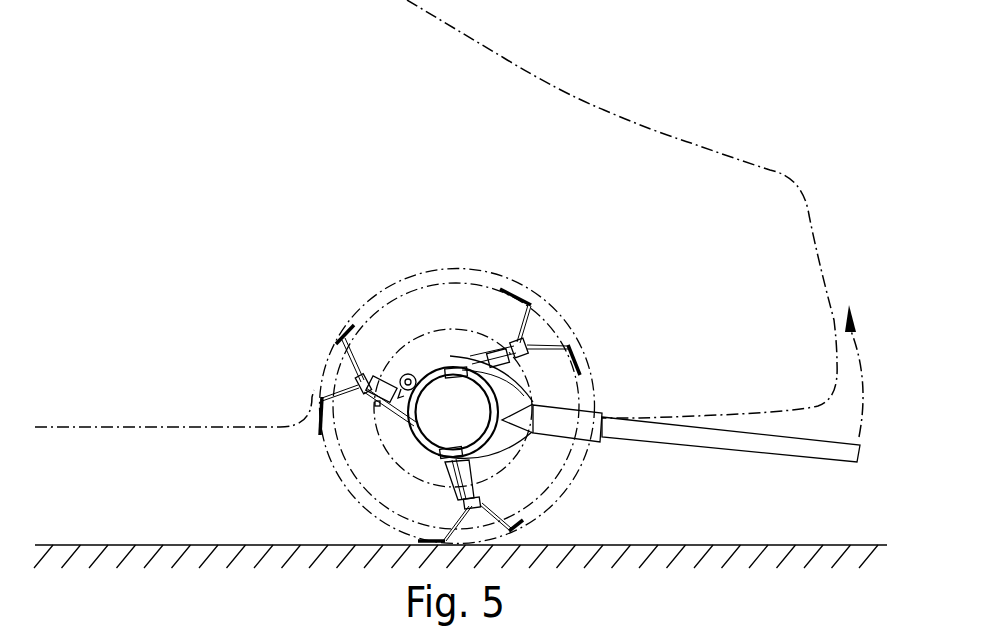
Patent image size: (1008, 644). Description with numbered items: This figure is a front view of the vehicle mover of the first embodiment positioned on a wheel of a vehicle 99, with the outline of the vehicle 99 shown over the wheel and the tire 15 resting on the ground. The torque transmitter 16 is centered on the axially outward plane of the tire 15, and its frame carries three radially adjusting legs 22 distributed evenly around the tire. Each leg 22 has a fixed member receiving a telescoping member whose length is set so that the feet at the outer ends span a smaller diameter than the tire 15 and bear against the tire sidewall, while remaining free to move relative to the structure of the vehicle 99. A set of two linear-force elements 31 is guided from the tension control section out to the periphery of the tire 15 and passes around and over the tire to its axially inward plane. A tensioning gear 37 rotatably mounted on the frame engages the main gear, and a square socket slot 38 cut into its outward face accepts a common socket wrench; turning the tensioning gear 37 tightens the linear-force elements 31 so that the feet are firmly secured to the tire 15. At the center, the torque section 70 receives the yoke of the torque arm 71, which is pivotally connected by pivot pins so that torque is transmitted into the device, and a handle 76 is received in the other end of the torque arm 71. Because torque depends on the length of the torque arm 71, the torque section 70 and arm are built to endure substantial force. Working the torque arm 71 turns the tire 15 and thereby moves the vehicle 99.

The tire 15 is at (336, 471).
The torque transmitter 16 is at (461, 234).
The radially adjusting legs 22 is at (527, 347).
The linear-force elements 31 is at (319, 398).
The tensioning gear 37 is at (413, 370).
The socket slot 38 is at (404, 374).
The torque section 70 is at (440, 422).
The torque arm 71 is at (612, 456).
The handle 76 is at (710, 450).
The vehicle 99 is at (811, 207).